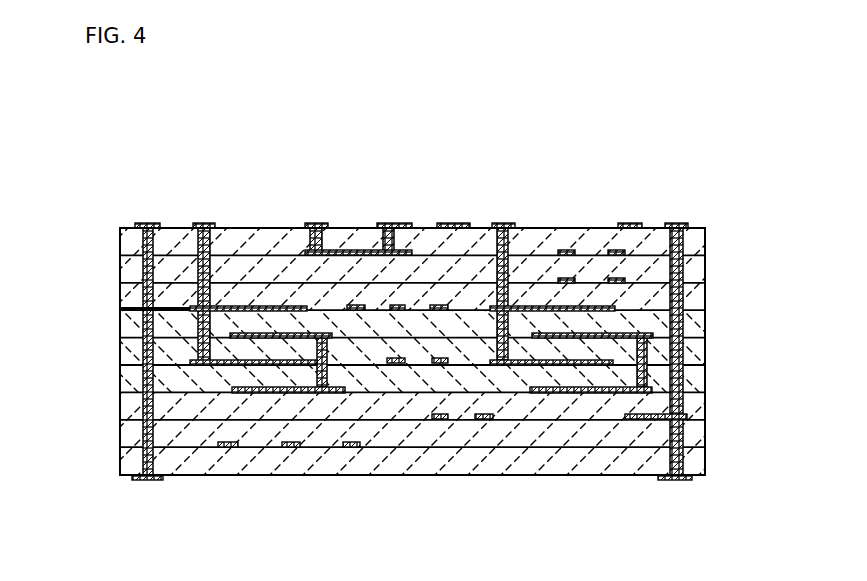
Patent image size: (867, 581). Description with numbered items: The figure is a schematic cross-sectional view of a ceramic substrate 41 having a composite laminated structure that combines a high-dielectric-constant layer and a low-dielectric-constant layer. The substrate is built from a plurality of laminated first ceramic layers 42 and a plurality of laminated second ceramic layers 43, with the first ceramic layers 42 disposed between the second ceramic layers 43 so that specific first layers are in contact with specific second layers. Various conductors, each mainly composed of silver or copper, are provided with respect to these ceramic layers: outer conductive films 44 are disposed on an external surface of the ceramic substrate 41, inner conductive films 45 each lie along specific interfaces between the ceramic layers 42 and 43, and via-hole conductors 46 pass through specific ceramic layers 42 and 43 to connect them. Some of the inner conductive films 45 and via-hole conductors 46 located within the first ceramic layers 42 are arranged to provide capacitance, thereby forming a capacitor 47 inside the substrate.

The ceramic substrate 41 is at (101, 115).
The first ceramic layer 42 is at (705, 324).
The second ceramic layer 43 is at (705, 242).
The outer conductive film 44 is at (393, 224).
The inner conductive film 45 is at (353, 448).
The via-hole conductor 46 is at (195, 327).
The capacitor 47 is at (233, 298).